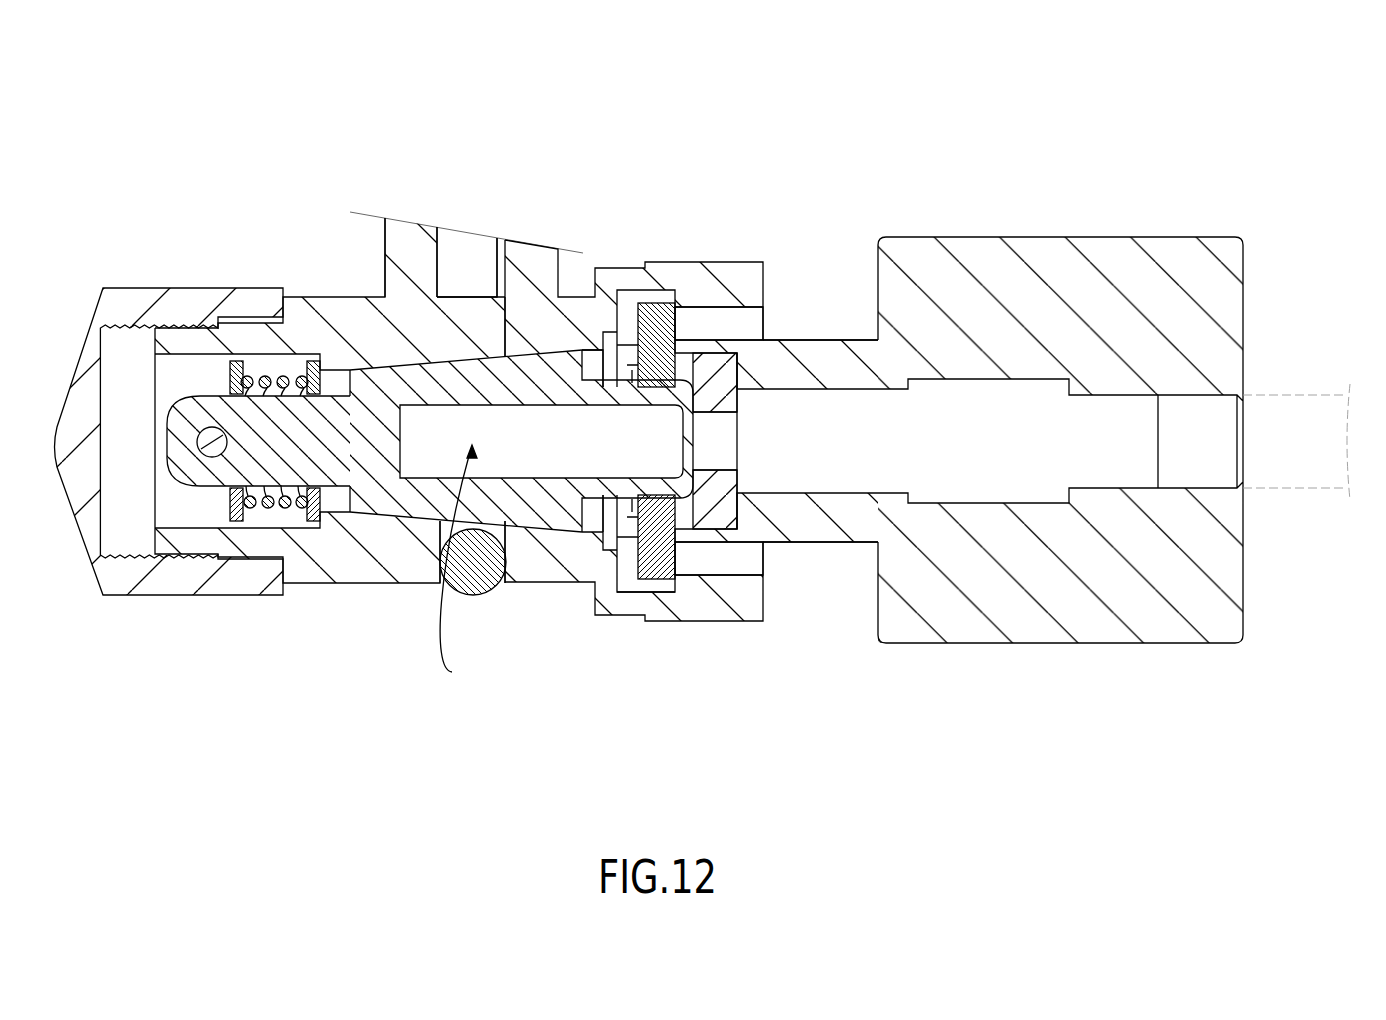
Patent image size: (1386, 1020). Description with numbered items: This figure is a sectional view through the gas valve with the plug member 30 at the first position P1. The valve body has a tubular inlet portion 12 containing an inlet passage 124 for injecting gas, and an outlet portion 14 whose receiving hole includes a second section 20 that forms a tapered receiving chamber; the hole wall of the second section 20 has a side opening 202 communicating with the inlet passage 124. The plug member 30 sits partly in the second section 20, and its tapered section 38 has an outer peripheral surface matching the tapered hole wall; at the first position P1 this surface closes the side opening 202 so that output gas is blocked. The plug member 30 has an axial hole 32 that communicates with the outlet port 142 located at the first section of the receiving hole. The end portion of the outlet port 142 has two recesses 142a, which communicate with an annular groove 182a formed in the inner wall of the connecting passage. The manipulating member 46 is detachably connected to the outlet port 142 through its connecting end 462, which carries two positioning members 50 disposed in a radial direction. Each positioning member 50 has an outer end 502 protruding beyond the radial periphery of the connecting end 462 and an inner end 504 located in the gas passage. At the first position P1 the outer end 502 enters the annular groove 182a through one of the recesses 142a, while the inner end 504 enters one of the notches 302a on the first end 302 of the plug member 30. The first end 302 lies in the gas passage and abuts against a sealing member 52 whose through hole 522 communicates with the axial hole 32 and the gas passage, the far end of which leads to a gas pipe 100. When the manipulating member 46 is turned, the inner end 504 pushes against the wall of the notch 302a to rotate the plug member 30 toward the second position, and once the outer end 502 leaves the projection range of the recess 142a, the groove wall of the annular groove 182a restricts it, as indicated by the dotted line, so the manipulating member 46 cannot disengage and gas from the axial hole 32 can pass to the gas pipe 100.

The inlet portion 12 is at (410, 245).
The outlet portion 14 is at (372, 567).
The second section 20 is at (418, 522).
The plug member 30 is at (358, 485).
The axial hole 32 is at (530, 450).
The tapered section 38 is at (428, 368).
The manipulating member 46 is at (1158, 238).
The positioning member 50 is at (647, 430).
The sealing member 52 is at (727, 447).
The gas pipe 100 is at (1268, 395).
The inlet passage 124 is at (470, 252).
The outlet port 142 is at (765, 565).
The recess 142a is at (733, 320).
The annular groove 182a is at (627, 583).
The side opening 202 is at (497, 330).
The first end 302 is at (675, 397).
The notch 302a is at (633, 340).
The connecting end 462 is at (595, 581).
The outer end 502 is at (640, 594).
The inner end 504 is at (687, 584).
The through hole 522 is at (745, 418).
The first position P1 is at (465, 570).